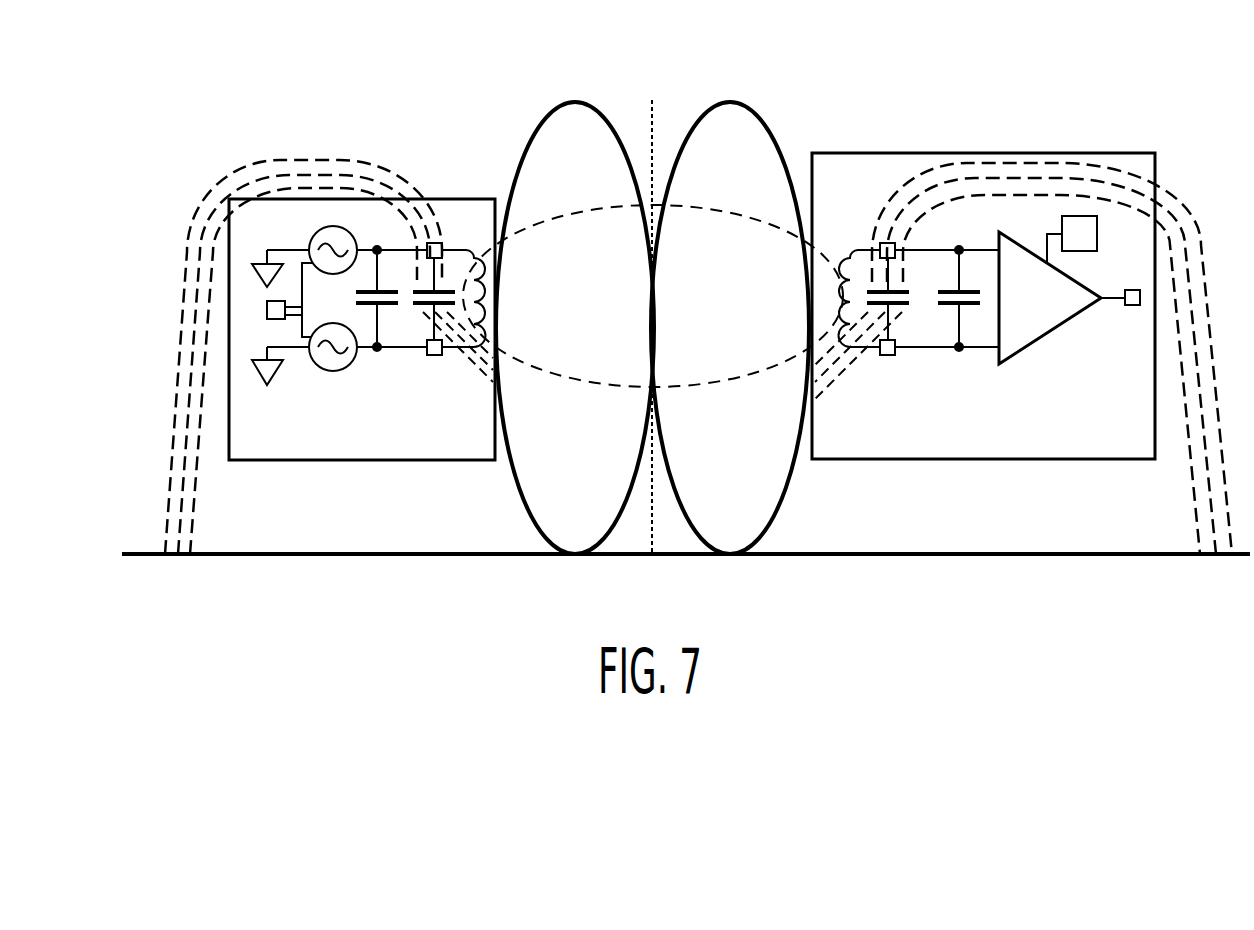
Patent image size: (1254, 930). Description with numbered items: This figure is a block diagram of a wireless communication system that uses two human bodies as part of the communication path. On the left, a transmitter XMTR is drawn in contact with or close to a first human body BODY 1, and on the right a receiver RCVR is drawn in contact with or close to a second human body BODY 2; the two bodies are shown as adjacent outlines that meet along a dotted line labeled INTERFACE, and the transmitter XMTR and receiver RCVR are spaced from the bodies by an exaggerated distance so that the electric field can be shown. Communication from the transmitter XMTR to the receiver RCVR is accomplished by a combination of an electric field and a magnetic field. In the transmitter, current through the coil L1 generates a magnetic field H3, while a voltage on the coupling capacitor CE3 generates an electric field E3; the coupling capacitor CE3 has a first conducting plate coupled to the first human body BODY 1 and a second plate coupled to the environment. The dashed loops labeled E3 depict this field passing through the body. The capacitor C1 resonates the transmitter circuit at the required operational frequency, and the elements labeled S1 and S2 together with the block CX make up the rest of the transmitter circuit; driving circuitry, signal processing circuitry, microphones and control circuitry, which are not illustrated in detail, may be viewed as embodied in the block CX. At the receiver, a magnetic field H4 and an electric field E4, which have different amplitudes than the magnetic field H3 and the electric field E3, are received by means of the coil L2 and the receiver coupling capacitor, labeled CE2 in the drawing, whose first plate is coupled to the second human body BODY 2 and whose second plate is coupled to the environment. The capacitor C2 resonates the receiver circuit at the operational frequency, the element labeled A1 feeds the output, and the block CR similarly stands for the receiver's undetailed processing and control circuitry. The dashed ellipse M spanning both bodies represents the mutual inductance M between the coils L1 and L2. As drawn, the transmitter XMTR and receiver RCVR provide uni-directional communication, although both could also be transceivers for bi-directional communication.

The electric field E3 is at (303, 332).
The electric field E4 is at (1052, 334).
The coil L1 is at (464, 274).
The coil L2 is at (850, 275).
The first signal source S1 is at (332, 271).
The second signal source S2 is at (333, 366).
The capacitor C1 is at (377, 322).
The capacitor C2 is at (959, 323).
The coupling capacitor CE3 is at (453, 318).
The receiver coupling electrodes CE2 is at (862, 321).
The block CX is at (267, 310).
The block CR is at (1097, 237).
The amplifier A1 is at (1069, 298).
The magnetic field H3 is at (535, 206).
The magnetic field H4 is at (770, 201).
The mutual inductance M is at (653, 296).
The transmitter XMTR is at (362, 329).
The receiver RCVR is at (983, 306).
The first human body BODY 1 is at (575, 328).
The second human body BODY 2 is at (730, 328).
The interface between bodies INTERFACE is at (652, 311).